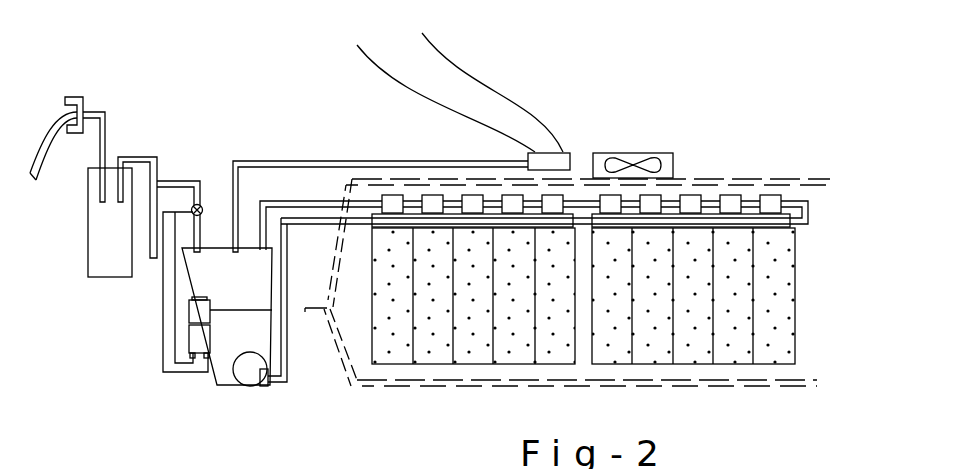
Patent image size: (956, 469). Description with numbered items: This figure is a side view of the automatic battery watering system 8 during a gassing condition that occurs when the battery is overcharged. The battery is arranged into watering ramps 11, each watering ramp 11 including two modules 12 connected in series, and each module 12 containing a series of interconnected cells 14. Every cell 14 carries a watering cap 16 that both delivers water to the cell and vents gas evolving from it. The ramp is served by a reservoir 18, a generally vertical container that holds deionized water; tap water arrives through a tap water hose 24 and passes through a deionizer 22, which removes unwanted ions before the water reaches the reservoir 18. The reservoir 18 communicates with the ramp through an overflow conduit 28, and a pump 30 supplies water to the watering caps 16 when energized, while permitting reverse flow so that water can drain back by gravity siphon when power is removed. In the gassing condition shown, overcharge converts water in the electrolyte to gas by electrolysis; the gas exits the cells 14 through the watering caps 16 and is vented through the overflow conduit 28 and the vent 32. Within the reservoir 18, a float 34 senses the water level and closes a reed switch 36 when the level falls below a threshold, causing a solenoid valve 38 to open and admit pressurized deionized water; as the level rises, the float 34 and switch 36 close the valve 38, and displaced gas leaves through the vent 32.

The automatic battery watering system 8 is at (296, 104).
The watering ramp 11 is at (810, 360).
The module 12 is at (765, 177).
The cell 14 is at (742, 333).
The watering cap 16 is at (778, 205).
The reservoir 18 is at (258, 282).
The deionizer 22 is at (157, 165).
The tap water hose 24 is at (63, 111).
The overflow conduit 28 is at (323, 200).
The pump 30 is at (243, 375).
The vent 32 is at (567, 152).
The float 34 is at (192, 313).
The reed switch 36 is at (197, 343).
The solenoid valve 38 is at (201, 206).